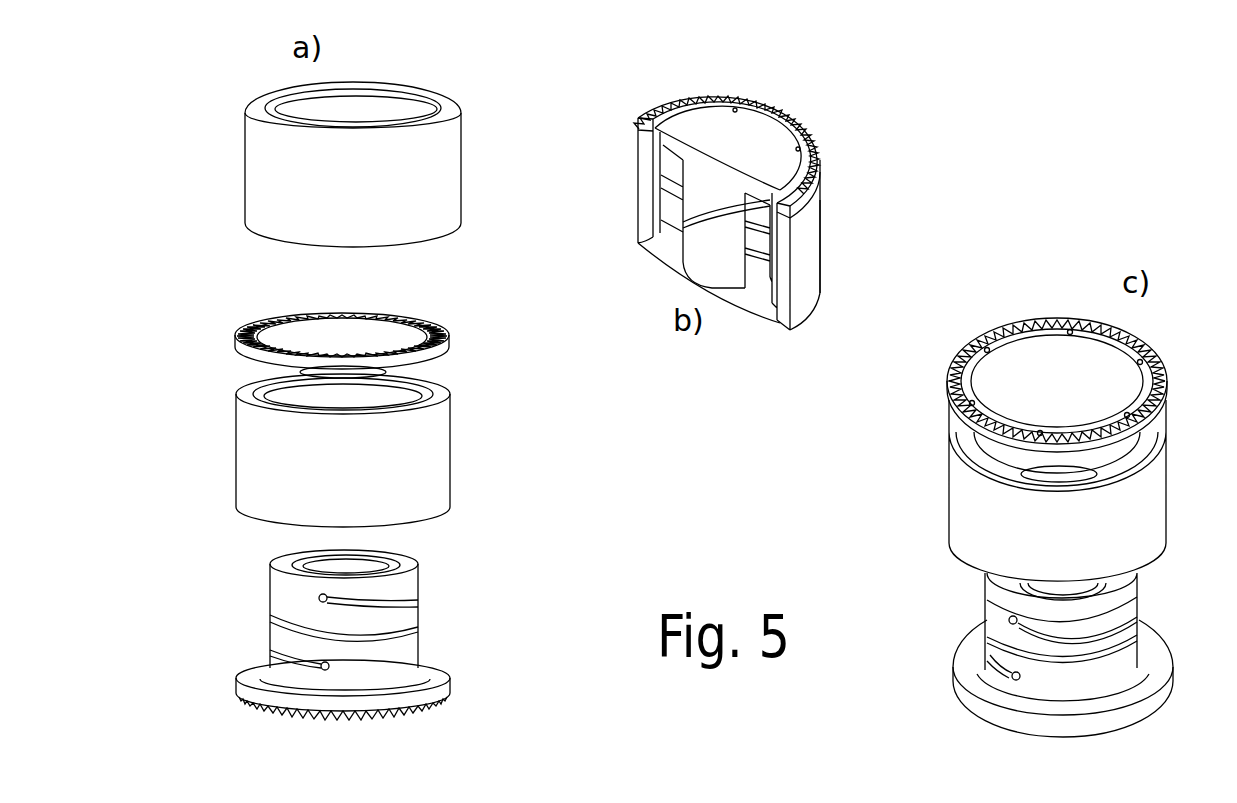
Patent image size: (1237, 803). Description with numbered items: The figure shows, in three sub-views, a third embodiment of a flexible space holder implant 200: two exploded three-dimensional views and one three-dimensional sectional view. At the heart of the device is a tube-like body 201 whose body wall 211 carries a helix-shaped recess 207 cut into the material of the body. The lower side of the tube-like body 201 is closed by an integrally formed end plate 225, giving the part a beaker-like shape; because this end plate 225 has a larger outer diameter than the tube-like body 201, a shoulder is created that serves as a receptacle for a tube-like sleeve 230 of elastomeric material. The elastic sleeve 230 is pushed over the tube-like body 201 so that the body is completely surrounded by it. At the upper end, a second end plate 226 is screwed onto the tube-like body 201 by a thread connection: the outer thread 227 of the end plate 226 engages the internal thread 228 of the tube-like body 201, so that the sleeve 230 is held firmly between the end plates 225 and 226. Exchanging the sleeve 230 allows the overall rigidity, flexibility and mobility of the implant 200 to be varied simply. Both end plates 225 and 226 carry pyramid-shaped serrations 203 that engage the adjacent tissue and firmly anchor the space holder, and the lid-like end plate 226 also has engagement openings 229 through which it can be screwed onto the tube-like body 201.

The implant 200 is at (828, 196).
The tube-like body 201 is at (420, 612).
The pyramid-shaped serrations 203 is at (416, 331).
The helix-shaped recess 207 is at (418, 600).
The body wall 211 is at (670, 202).
The end plate 225 is at (451, 686).
The end plate 226 is at (384, 326).
The outer thread 227 is at (437, 386).
The internal thread 228 is at (384, 561).
The engagement openings 229 is at (752, 104).
The tube-like sleeve 230 is at (455, 185).